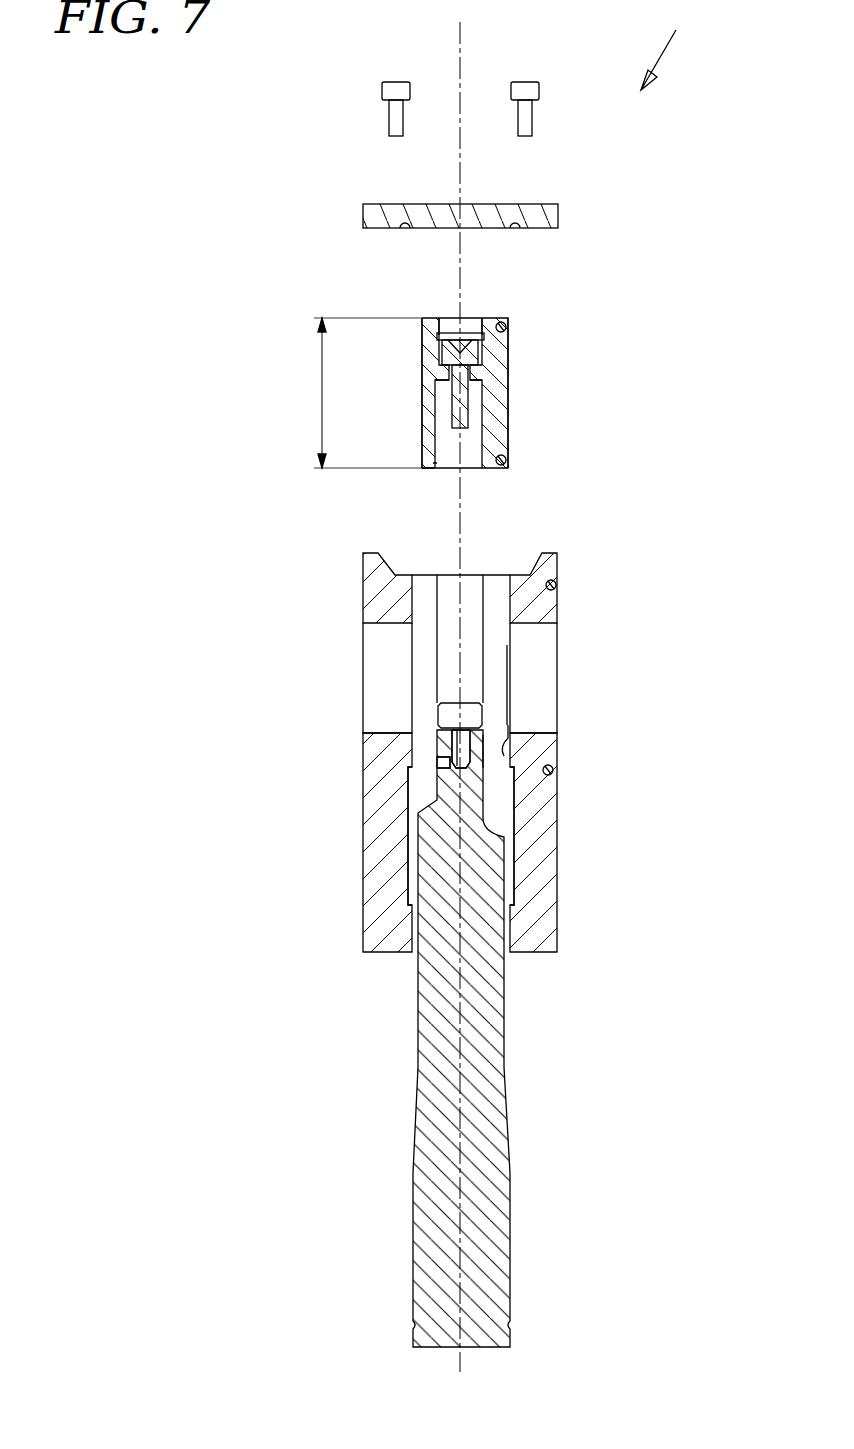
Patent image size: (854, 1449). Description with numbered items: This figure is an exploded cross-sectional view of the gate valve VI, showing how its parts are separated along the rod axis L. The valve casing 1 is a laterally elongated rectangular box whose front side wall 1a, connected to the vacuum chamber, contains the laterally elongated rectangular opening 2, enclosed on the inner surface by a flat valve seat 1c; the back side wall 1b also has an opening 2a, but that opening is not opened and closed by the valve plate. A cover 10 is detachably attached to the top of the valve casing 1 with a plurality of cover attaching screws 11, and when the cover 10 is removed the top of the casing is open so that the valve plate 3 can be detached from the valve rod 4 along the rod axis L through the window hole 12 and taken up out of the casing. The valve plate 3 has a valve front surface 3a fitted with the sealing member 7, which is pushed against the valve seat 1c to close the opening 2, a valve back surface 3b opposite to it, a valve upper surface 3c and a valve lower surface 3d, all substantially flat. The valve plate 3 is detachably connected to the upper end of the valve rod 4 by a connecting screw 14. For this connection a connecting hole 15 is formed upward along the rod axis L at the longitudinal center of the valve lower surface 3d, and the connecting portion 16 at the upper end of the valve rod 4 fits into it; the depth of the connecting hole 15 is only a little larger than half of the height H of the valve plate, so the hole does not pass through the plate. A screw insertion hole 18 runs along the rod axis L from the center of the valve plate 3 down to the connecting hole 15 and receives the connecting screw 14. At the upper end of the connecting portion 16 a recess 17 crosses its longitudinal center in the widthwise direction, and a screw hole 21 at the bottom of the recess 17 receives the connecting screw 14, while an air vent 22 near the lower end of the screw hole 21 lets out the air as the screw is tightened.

The valve casing 1 is at (560, 905).
The front side wall 1a is at (537, 850).
The back side wall 1b is at (385, 890).
The valve seat 1c is at (503, 742).
The opening 2 is at (536, 640).
The opening 2a is at (385, 648).
The valve plate 3 is at (495, 365).
The valve front surface 3a is at (510, 408).
The valve back surface 3b is at (422, 400).
The valve upper surface 3c is at (437, 318).
The valve lower surface 3d is at (430, 470).
The valve rod 4 is at (482, 1222).
The sealing member 7 is at (506, 327).
The cover 10 is at (493, 216).
The cover attaching screws 11 is at (393, 92).
The window hole 12 is at (497, 590).
The connecting screw 14 is at (453, 397).
The connecting hole 15 is at (480, 445).
The connecting portion 16 is at (478, 752).
The recess 17 is at (450, 715).
The screw insertion hole 18 is at (470, 330).
The screw hole 21 is at (456, 742).
The air vent 22 is at (447, 762).
The height of the valve plate H is at (356, 393).
The rod axis L is at (460, 686).
The view direction arrow VI is at (666, 45).